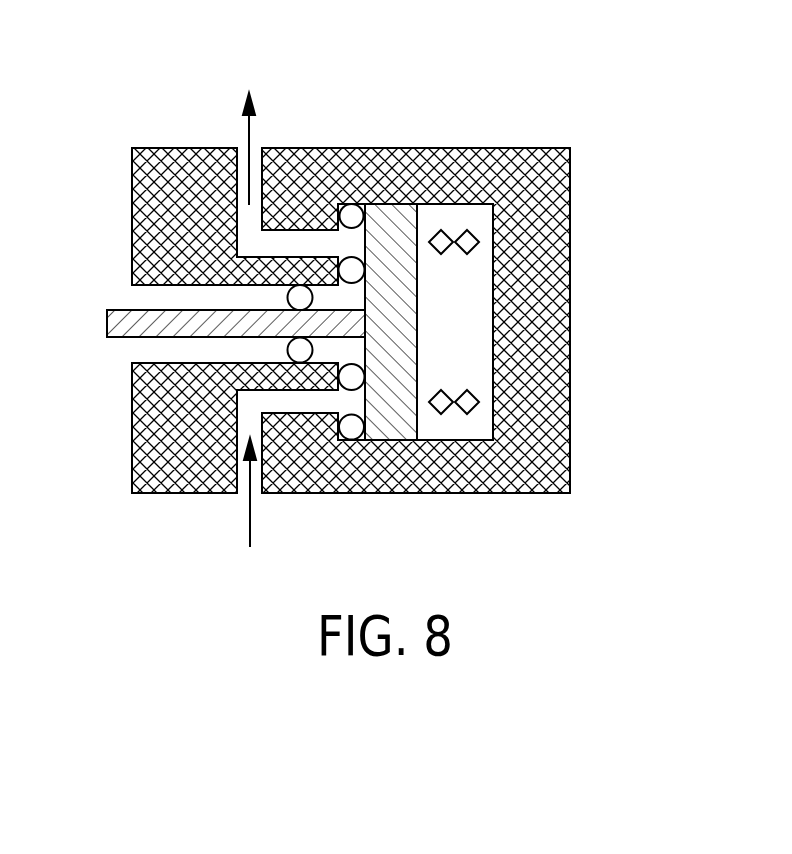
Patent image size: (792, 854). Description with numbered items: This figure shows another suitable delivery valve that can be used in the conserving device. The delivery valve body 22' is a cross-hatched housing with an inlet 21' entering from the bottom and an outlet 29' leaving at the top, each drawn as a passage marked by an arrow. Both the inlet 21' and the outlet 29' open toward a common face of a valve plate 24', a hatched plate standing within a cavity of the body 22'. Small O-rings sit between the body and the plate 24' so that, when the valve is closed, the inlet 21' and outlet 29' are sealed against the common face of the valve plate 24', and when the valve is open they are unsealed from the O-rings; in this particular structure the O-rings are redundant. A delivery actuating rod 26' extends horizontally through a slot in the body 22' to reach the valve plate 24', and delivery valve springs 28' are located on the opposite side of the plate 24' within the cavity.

The inlet 21' is at (291, 492).
The delivery valve body 22' is at (401, 324).
The valve plate 24' is at (423, 322).
The delivery actuating rod 26' is at (213, 350).
The delivery valve springs 28' is at (569, 322).
The outlet 29' is at (295, 142).